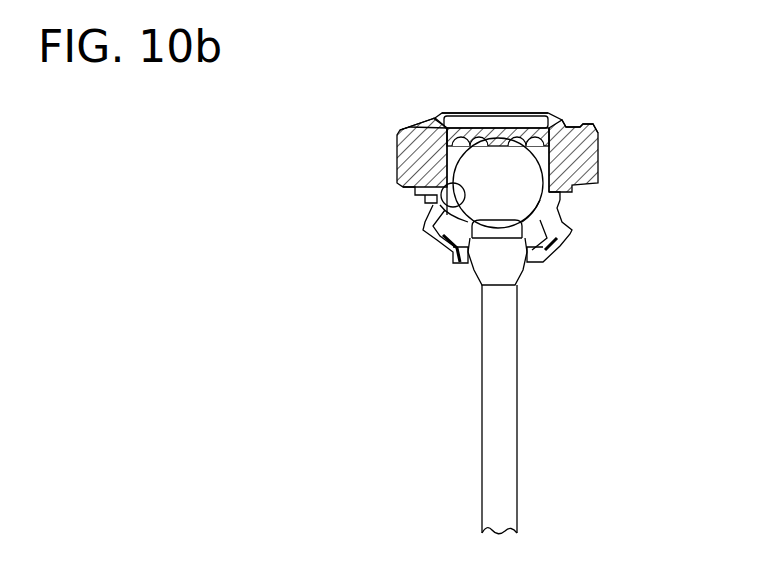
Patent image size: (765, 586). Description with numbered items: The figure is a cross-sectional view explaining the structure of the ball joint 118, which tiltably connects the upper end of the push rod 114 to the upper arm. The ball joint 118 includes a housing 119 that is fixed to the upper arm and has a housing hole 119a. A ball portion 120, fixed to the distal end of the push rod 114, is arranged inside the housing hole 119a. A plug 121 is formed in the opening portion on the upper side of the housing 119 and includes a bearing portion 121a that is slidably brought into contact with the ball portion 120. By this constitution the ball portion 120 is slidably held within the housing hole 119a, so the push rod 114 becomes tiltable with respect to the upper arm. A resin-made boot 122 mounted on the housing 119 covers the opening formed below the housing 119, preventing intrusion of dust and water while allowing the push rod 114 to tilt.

The push rod 114 is at (500, 407).
The ball joint 118 is at (581, 100).
The housing 119 is at (397, 160).
The housing hole 119a is at (433, 207).
The ball portion 120 is at (522, 182).
The plug 121 is at (498, 115).
The bearing portion 121a is at (400, 132).
The boot 122 is at (577, 222).